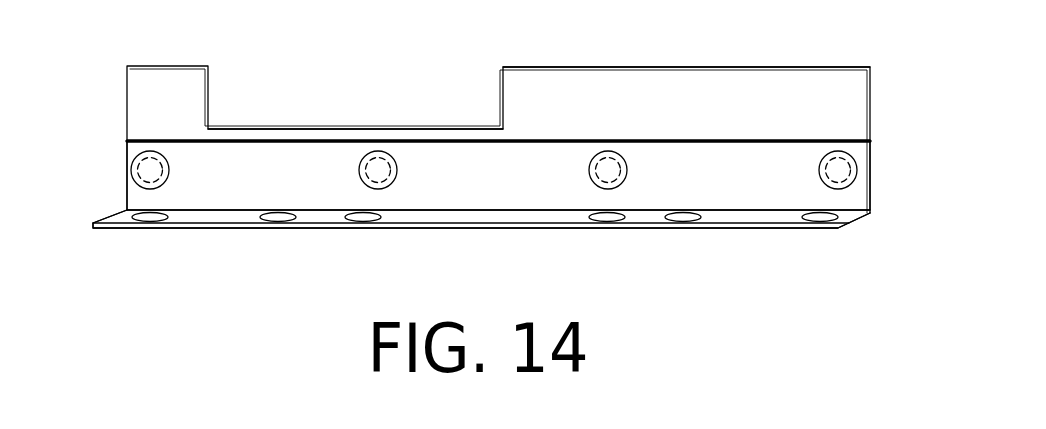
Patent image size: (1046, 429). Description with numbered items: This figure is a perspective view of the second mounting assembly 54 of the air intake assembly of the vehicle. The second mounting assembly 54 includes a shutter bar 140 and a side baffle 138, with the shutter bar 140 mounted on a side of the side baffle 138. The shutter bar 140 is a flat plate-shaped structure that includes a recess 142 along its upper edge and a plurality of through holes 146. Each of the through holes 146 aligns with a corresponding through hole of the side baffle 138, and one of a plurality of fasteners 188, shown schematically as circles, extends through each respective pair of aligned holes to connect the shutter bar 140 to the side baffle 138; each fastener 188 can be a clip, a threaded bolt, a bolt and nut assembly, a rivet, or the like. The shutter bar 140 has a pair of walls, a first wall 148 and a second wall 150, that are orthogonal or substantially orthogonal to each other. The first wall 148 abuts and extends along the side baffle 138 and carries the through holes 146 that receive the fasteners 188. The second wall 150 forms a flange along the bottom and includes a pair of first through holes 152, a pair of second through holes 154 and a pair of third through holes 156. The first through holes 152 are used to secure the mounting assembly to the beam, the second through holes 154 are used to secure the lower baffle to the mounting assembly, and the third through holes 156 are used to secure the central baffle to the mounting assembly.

The second mounting assembly 54 is at (420, 70).
The side baffle 138 is at (781, 67).
The shutter bar 140 is at (729, 140).
The recess 142 is at (300, 129).
The through holes 146 is at (167, 178).
The first wall 148 is at (127, 152).
The second wall 150 is at (116, 214).
The first through holes 152 is at (363, 218).
The second through holes 154 is at (150, 218).
The third through holes 156 is at (683, 218).
The fasteners 188 is at (168, 162).